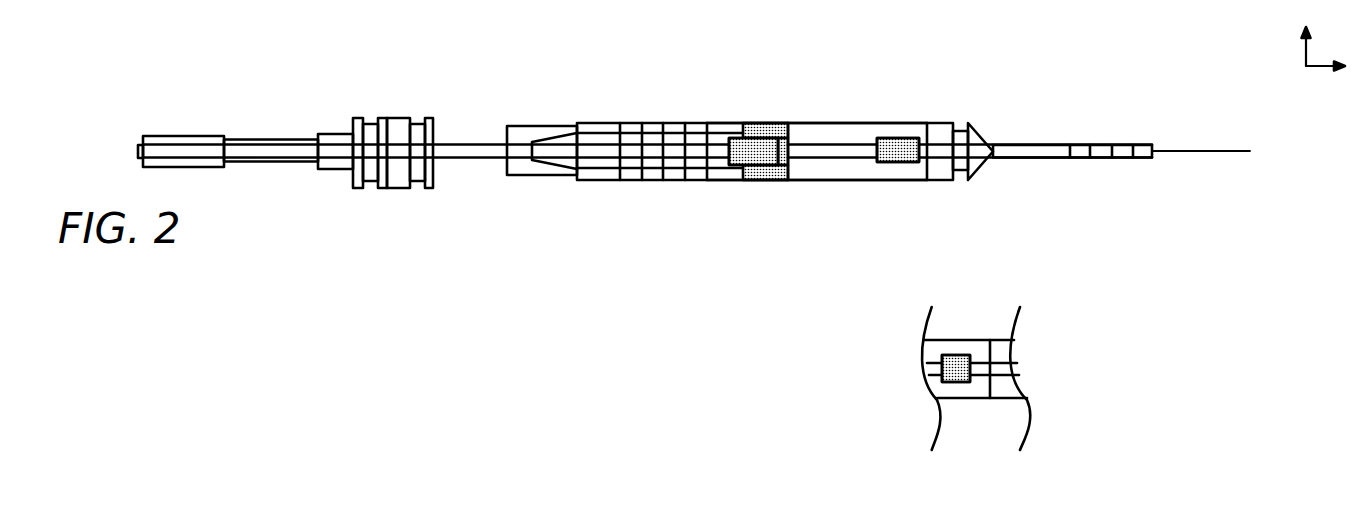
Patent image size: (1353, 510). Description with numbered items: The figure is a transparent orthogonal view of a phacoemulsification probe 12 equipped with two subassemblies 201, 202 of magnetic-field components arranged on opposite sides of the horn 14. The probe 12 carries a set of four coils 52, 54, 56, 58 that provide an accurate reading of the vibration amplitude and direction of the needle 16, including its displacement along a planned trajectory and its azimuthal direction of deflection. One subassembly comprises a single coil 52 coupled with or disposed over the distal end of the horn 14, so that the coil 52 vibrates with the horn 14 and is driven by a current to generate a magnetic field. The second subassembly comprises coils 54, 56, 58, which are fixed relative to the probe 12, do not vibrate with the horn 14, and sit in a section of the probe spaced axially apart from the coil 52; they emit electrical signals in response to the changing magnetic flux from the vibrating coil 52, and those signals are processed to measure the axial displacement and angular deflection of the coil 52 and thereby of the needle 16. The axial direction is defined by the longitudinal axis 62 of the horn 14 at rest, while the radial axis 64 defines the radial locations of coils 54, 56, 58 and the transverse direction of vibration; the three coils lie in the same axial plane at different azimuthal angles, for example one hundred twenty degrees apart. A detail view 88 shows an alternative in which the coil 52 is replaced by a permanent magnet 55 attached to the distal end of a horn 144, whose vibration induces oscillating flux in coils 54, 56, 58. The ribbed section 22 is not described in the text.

The phacoemulsification probe 12 is at (509, 277).
The horn 14 is at (868, 63).
The needle 16 is at (1196, 188).
The ribbed tube section 22 is at (642, 180).
The coil 52 is at (905, 135).
The coil 54 is at (780, 130).
The permanent magnet 55 is at (965, 382).
The coil 56 is at (770, 182).
The coil 58 is at (728, 180).
The longitudinal axis 62 is at (1320, 70).
The radial axis 64 is at (1303, 47).
The replacement of coil 52 with permanent magnet 88 is at (983, 350).
The horn 144 is at (980, 370).
The subassembly 201 is at (802, 255).
The subassembly 202 is at (982, 93).